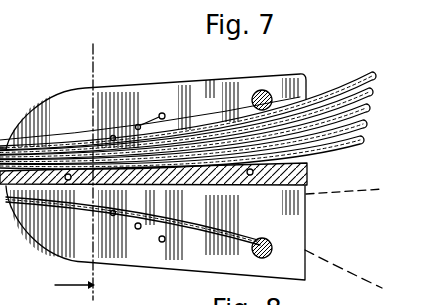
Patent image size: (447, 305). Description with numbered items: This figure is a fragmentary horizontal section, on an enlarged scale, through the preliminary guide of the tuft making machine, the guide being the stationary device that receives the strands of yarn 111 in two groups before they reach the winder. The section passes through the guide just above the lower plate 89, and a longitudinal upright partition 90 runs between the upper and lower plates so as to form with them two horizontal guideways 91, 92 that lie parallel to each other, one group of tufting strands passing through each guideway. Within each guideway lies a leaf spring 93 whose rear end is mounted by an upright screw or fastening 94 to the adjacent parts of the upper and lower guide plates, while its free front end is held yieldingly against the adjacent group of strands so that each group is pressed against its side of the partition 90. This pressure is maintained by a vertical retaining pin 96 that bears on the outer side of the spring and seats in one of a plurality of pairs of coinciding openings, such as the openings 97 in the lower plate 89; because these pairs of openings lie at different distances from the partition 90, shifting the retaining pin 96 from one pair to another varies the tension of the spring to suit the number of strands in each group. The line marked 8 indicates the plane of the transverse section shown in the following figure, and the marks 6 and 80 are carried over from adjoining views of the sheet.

The figure marker 6 is at (10, 23).
The element 80 is at (172, 6).
The section line 8- 8 is at (76, 165).
The lower plate 89 is at (188, 108).
The strands of yarn 111 is at (345, 78).
The guideway 91 is at (312, 162).
The guideway 92 is at (304, 222).
The longitudinal upright partition 90 is at (307, 180).
The leaf spring 93 is at (186, 125).
The upright screw or fastening 94 is at (266, 89).
The vertical retaining pin 96 is at (111, 136).
The opening 97 is at (115, 136).